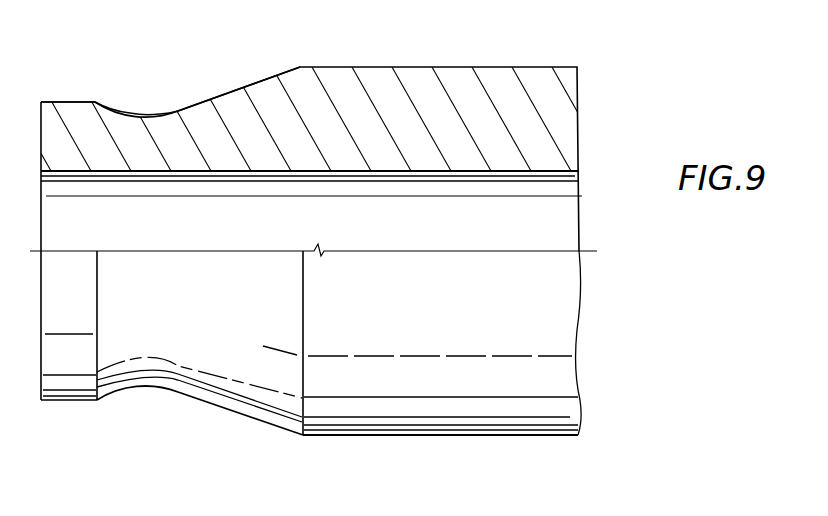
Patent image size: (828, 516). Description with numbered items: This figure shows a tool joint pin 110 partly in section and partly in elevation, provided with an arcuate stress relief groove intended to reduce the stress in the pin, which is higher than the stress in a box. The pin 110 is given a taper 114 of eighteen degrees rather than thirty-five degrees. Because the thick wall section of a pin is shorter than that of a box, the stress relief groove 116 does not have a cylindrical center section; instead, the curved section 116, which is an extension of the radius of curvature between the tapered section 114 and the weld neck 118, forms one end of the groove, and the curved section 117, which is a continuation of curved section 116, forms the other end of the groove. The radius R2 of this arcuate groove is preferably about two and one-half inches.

The pin 110 is at (403, 67).
The taper 114 is at (250, 87).
The stress relief groove 116 is at (177, 111).
The curved section 117 is at (115, 110).
The weld neck 118 is at (70, 102).
The radius R2 is at (145, 117).